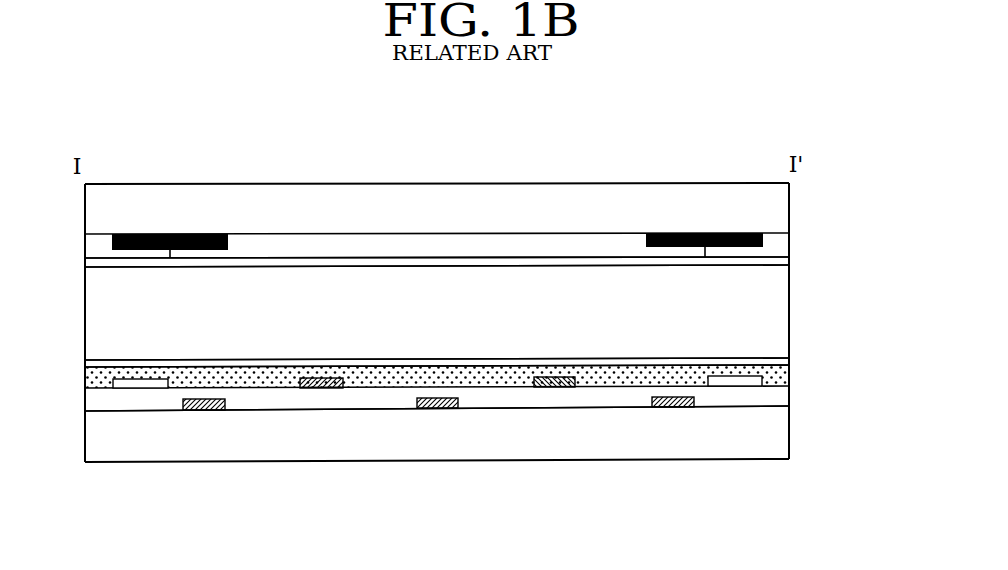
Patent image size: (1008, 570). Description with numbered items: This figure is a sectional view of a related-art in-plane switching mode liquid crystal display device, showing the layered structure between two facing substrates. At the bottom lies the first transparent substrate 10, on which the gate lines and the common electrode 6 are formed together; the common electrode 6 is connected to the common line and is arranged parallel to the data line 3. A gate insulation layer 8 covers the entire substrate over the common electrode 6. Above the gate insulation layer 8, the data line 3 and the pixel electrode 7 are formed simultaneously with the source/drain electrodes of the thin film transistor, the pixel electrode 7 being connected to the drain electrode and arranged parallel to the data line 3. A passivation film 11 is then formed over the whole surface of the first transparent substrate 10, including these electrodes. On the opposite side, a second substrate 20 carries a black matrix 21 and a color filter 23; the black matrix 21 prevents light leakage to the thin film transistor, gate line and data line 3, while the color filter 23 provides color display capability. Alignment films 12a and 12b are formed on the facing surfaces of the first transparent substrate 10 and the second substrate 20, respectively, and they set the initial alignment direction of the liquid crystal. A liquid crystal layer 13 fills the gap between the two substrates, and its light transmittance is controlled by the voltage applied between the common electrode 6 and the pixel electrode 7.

The second substrate 20 is at (775, 207).
The black matrix 21 is at (668, 232).
The color filter 23 is at (503, 245).
The alignment film 12b is at (775, 262).
The liquid crystal layer 13 is at (777, 315).
The alignment film 12a is at (777, 353).
The passivation film 11 is at (778, 373).
The data line 3 is at (138, 389).
The pixel electrode 7 is at (313, 389).
The gate insulation layer 8 is at (777, 396).
The common electrode 6 is at (198, 410).
The first transparent substrate 10 is at (777, 438).